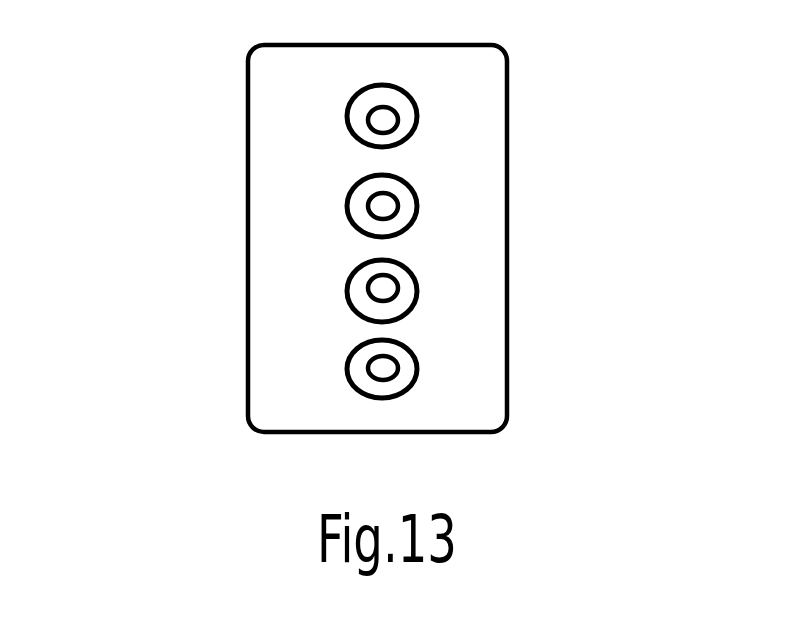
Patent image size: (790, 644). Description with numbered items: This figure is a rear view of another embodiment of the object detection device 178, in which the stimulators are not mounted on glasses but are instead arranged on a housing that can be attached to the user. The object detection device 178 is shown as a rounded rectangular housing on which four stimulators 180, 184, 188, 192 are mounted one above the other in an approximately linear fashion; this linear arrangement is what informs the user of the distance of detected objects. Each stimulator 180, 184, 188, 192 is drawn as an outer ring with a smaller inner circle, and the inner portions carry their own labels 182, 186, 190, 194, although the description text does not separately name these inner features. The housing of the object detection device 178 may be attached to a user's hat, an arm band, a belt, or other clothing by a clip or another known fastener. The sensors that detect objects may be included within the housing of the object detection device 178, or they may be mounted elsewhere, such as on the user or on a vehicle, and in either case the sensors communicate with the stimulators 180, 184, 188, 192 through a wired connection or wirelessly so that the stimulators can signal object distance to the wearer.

The object detection device 178 is at (527, 355).
The stimulator 180 is at (407, 110).
The first aperture 182 is at (375, 122).
The stimulator 184 is at (407, 202).
The second aperture 186 is at (375, 207).
The stimulator 188 is at (407, 283).
The third aperture 190 is at (375, 290).
The stimulator 192 is at (398, 383).
The fourth aperture 194 is at (367, 373).